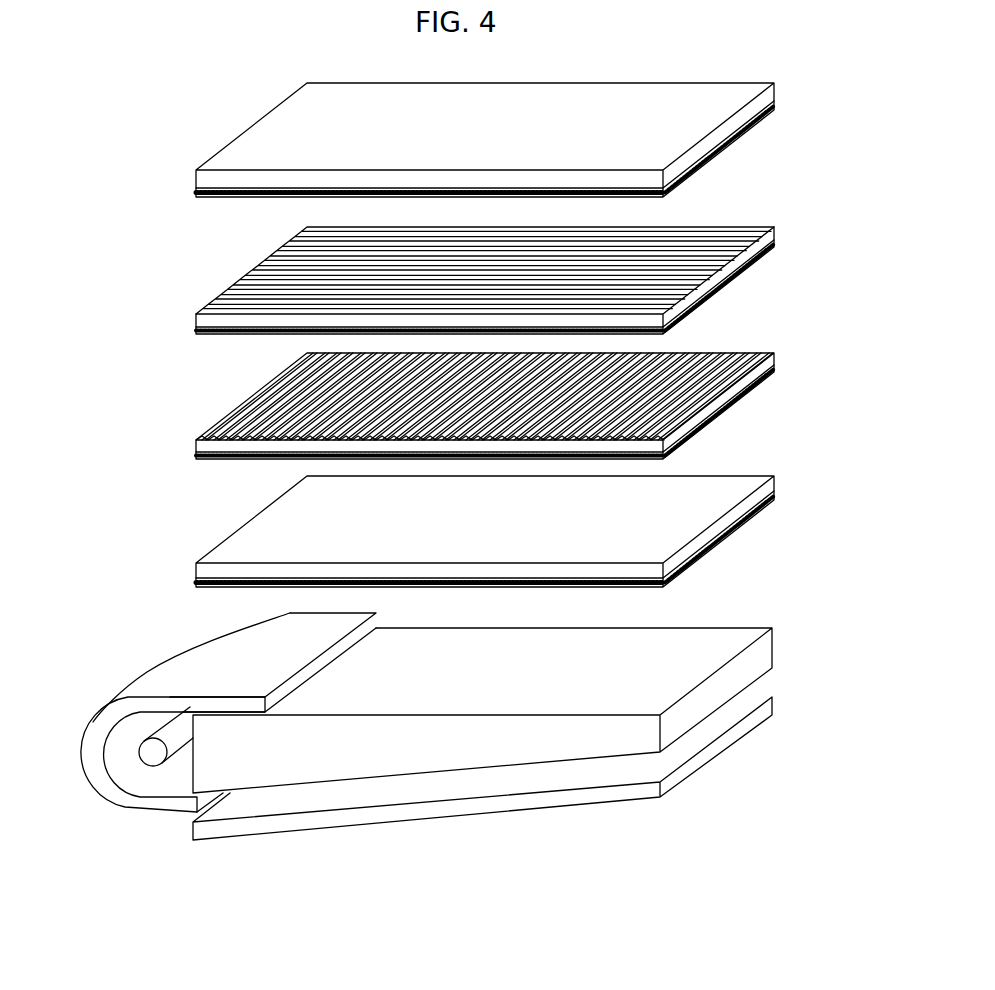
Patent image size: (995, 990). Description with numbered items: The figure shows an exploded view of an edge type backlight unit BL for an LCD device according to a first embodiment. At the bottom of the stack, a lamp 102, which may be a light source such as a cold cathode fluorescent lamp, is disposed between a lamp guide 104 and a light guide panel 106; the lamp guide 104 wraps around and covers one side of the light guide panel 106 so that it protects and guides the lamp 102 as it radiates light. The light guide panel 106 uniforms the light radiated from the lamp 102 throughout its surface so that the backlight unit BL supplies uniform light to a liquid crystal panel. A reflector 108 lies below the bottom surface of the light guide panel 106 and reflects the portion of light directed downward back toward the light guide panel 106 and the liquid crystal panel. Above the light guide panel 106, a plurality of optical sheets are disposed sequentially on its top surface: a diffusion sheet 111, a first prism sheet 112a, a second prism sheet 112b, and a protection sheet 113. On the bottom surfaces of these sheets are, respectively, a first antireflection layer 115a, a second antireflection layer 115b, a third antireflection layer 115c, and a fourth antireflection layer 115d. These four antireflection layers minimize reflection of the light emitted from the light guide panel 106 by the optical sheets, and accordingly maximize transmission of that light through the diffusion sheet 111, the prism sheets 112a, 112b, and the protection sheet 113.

The backlight unit BL is at (116, 276).
The lamp 102 is at (142, 752).
The lamp guide 104 is at (88, 730).
The light guide panel 106 is at (770, 630).
The reflector 108 is at (545, 800).
The diffusion sheet 111 is at (768, 488).
The first prism sheet 112a is at (767, 365).
The second prism sheet 112b is at (763, 240).
The protection sheet 113 is at (768, 100).
The first antireflection layer 115a is at (760, 507).
The second antireflection layer 115b is at (757, 387).
The third antireflection layer 115c is at (763, 257).
The fourth antireflection layer 115d is at (763, 118).